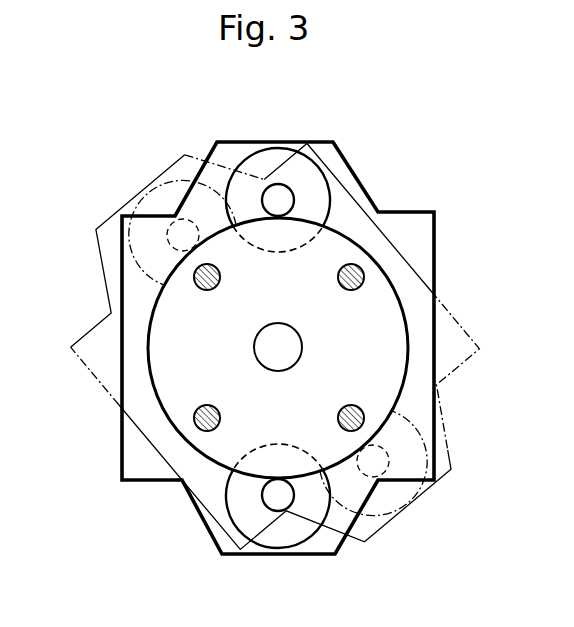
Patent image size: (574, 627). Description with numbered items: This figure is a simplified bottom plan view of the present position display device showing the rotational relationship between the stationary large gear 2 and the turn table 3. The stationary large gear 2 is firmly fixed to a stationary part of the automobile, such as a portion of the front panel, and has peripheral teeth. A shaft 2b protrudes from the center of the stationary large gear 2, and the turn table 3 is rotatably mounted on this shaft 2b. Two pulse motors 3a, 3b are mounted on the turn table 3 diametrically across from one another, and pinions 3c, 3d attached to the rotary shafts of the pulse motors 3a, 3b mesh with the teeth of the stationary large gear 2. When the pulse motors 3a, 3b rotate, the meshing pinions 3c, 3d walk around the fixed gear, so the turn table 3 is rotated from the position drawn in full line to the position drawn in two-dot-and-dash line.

The stationary large gear 2 is at (392, 303).
The shaft 2b is at (284, 361).
The turn table 3 is at (133, 455).
The pulse motor 3a is at (285, 530).
The pulse motor 3b is at (279, 158).
The pinion 3c is at (268, 492).
The pinion 3d is at (286, 198).